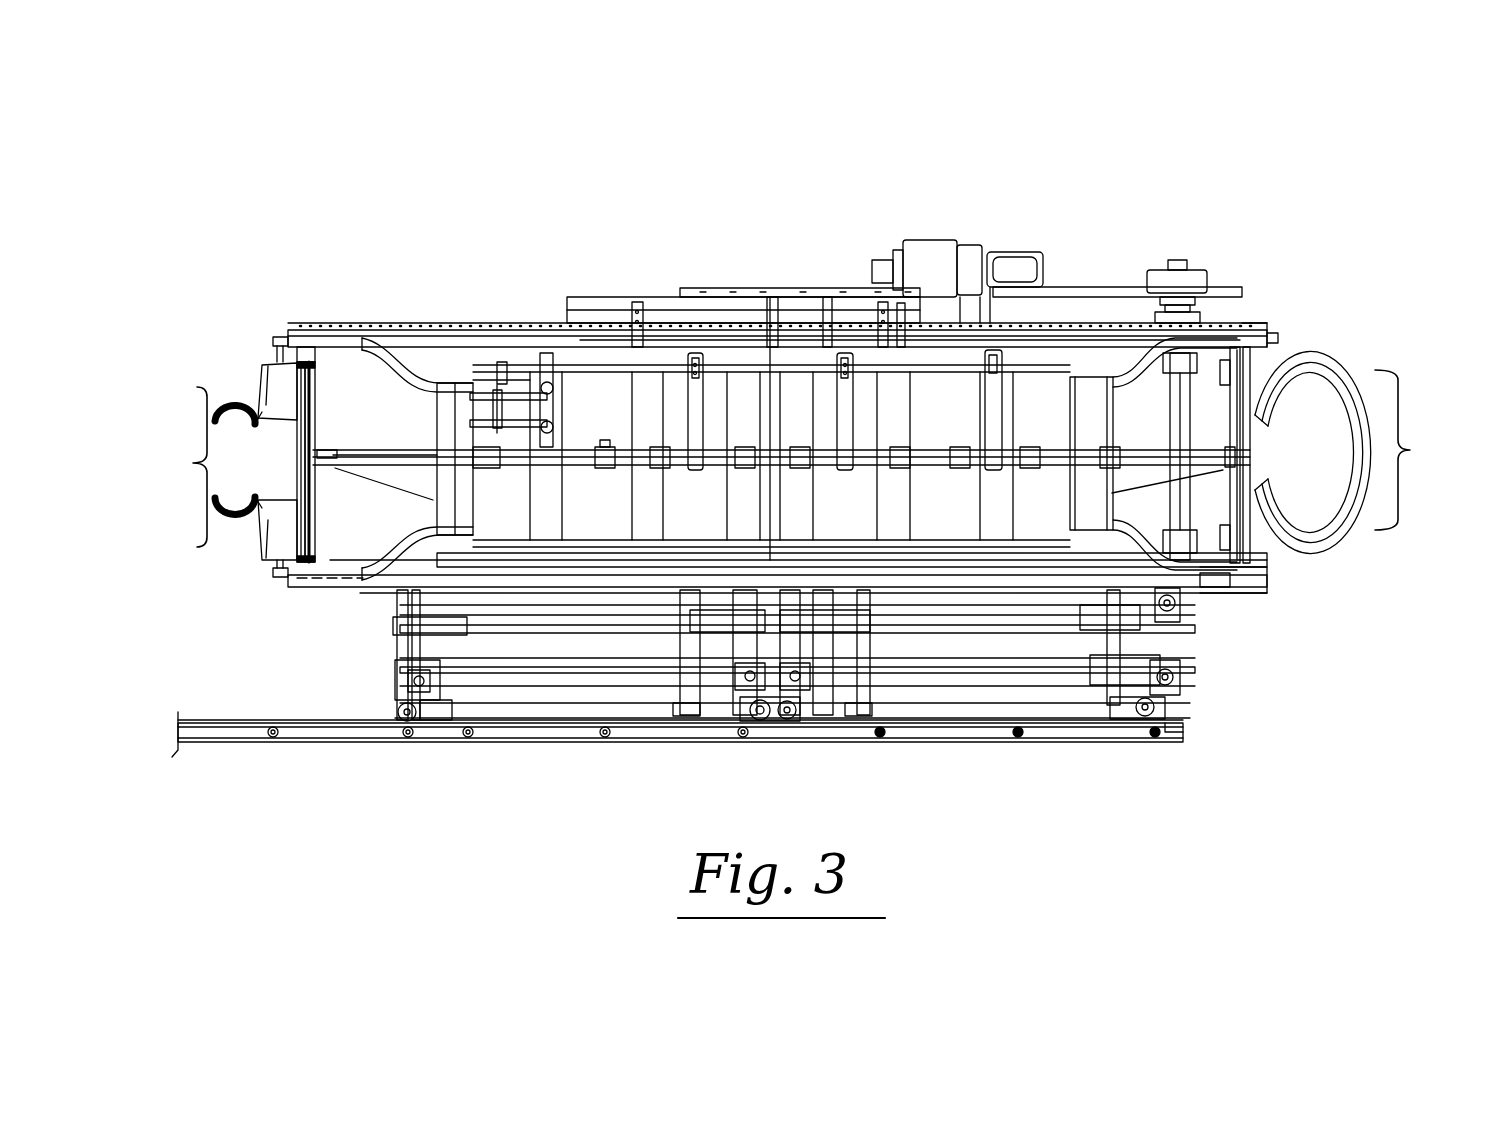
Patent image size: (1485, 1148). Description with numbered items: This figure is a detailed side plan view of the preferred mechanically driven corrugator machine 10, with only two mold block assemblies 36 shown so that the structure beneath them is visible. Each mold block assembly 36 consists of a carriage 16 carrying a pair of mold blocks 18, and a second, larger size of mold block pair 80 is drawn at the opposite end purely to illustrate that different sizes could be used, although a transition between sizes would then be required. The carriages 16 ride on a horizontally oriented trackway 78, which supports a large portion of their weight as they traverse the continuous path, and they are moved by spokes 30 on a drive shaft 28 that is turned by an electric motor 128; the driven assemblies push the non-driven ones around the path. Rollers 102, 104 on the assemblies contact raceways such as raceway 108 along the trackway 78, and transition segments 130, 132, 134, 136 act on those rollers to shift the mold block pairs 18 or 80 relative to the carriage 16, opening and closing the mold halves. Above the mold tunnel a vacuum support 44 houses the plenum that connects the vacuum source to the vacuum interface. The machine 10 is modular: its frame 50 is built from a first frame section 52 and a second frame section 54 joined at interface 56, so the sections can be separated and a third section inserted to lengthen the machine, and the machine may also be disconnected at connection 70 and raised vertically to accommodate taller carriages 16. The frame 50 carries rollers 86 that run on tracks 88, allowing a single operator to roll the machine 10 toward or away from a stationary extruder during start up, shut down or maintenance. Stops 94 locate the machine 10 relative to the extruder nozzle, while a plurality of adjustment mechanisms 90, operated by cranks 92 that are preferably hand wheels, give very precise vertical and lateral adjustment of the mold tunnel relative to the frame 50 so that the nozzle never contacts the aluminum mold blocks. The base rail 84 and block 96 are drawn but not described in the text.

The machine 10 is at (732, 205).
The carriages 16 is at (316, 440).
The mold block pairs 18 is at (224, 461).
The drive shaft 28 is at (1183, 427).
The spokes 30 is at (1207, 573).
The mold block assemblies 36 is at (316, 398).
The vacuum support 44 is at (553, 387).
The frame 50 is at (882, 600).
The first frame section 52 is at (678, 541).
The second frame section 54 is at (873, 540).
The interface 56 is at (772, 405).
The connection 70 is at (1112, 447).
The trackway 78 is at (428, 455).
The mold block pairs 80 is at (1356, 452).
The base rail 84 is at (552, 733).
The rollers 86 is at (390, 710).
The tracks 88 is at (1065, 733).
The adjustment mechanisms 90 is at (398, 660).
The cranks 92 is at (1190, 607).
The stops 94 is at (333, 718).
The shaft bearing block 96 is at (617, 464).
The rollers 102 is at (279, 339).
The rollers 104 is at (283, 574).
The raceways 108 is at (497, 372).
The electric motor 128 is at (943, 247).
The transition segments 130 is at (400, 338).
The transition segments 132 is at (430, 537).
The transition segments 134 is at (1107, 383).
The transition segments 136 is at (1107, 507).